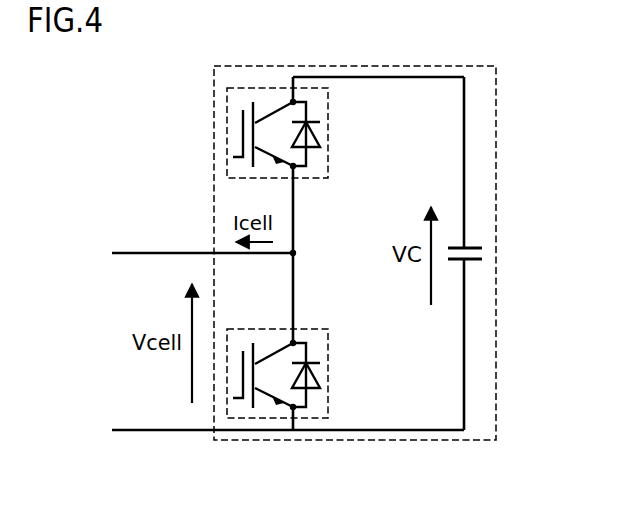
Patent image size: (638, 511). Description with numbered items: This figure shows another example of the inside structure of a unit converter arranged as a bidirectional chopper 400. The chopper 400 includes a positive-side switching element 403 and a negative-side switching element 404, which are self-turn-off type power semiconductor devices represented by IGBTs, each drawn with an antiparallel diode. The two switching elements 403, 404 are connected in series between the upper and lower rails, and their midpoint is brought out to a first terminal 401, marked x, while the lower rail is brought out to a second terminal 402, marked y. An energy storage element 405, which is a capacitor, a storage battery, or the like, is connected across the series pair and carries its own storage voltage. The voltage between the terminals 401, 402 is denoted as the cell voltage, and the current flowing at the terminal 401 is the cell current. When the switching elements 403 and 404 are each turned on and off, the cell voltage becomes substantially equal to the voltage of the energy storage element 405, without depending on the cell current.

The cell 400 is at (302, 66).
The first terminal x 401 is at (128, 252).
The second terminal y 402 is at (128, 431).
The positive-side switching element 403 is at (315, 178).
The negative-side switching element 404 is at (318, 328).
The energy storage element 405 is at (455, 247).